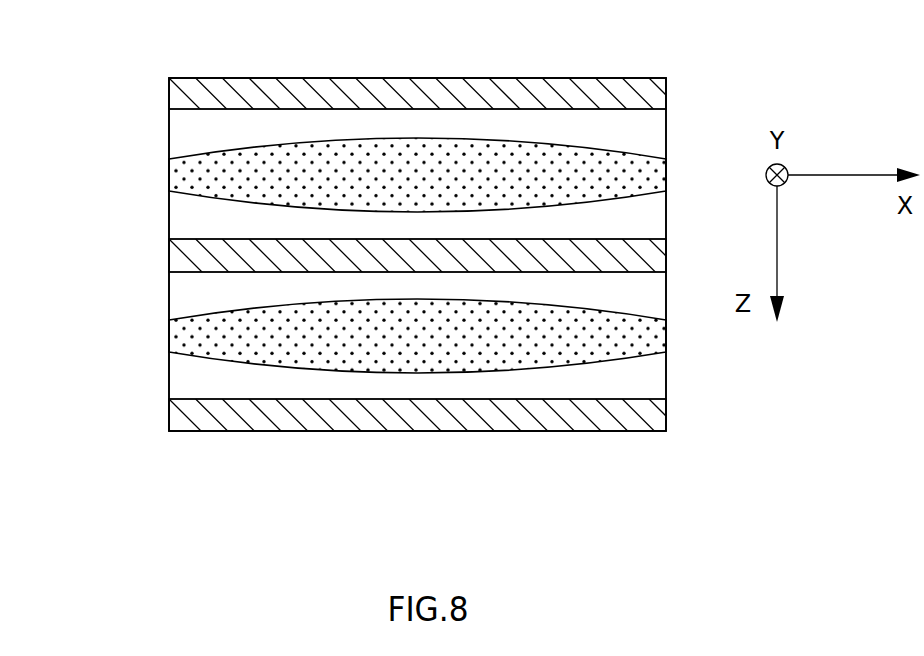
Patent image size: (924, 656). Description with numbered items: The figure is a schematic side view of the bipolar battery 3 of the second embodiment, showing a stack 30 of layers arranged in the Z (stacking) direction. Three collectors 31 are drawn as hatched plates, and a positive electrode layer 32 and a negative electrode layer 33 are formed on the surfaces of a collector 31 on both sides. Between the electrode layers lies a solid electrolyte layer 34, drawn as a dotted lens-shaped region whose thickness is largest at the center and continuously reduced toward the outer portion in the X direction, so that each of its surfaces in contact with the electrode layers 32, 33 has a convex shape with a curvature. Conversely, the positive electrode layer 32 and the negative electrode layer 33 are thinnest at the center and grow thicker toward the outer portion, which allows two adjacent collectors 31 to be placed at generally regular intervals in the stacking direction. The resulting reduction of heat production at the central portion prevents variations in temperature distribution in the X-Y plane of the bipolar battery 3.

The bipolar battery 3 is at (598, 53).
The laminated structure 30 is at (64, 213).
The collector 31 is at (643, 94).
The positive electrode layer 32 is at (185, 228).
The negative electrode layer 33 is at (635, 130).
The solid electrolyte layer 34 is at (172, 173).